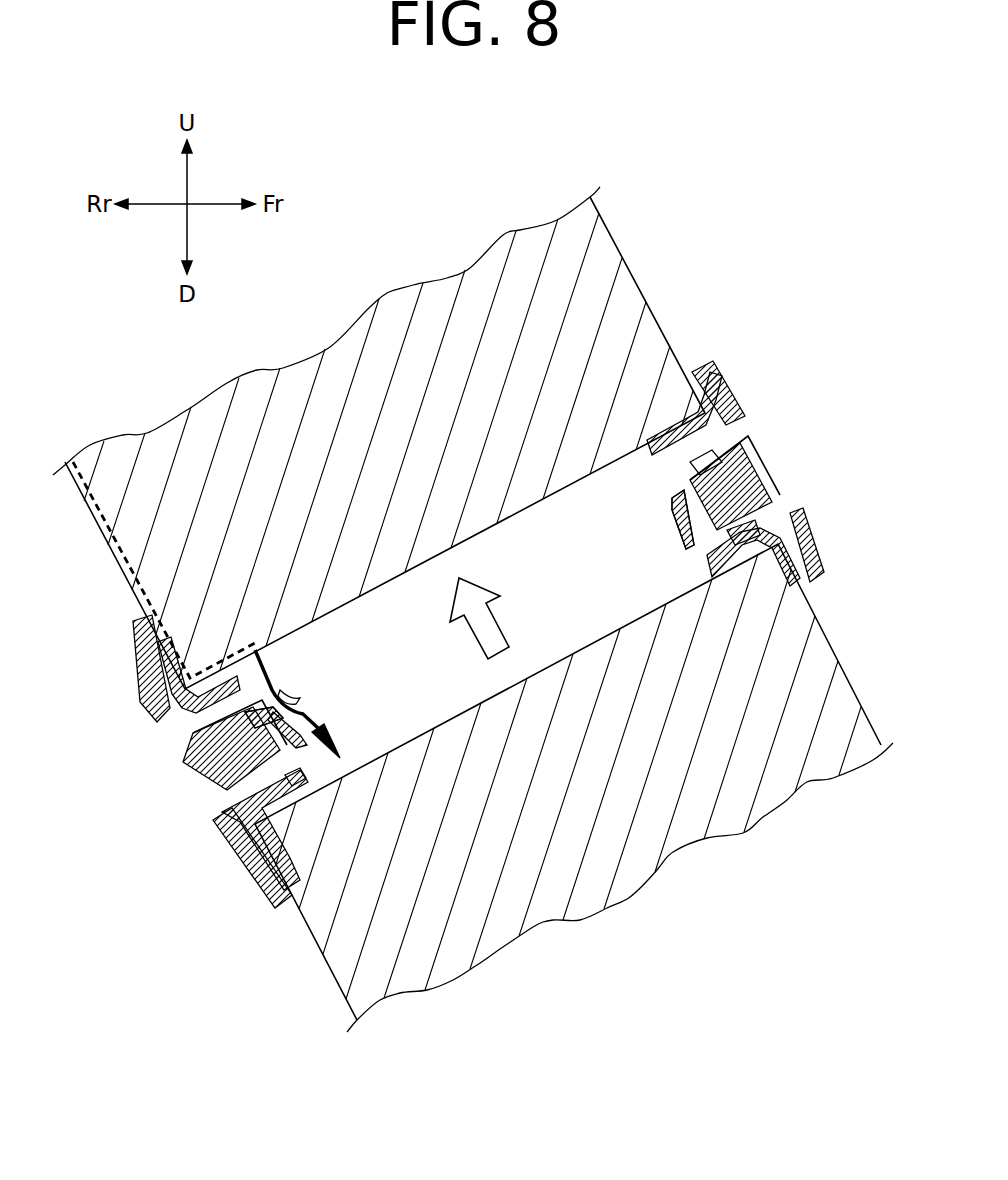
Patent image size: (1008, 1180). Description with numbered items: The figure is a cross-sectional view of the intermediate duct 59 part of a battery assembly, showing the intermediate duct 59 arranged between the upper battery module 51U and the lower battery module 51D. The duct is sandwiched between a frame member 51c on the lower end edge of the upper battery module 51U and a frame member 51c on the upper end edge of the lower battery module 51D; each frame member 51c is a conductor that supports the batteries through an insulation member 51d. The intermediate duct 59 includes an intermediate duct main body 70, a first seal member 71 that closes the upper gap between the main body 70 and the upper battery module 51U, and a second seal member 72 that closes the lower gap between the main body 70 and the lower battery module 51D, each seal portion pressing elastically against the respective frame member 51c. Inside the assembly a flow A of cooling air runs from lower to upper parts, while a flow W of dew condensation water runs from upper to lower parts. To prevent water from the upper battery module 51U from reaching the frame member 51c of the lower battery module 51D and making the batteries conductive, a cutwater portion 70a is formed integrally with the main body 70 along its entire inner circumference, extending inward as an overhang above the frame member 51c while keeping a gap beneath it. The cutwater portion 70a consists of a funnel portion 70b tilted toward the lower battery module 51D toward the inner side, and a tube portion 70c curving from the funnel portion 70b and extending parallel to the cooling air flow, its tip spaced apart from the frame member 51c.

The upper battery module 51U is at (628, 283).
The lower battery module 51D is at (827, 642).
The frame member 51c is at (185, 718).
The insulation member 51d is at (140, 637).
The intermediate duct 59 is at (188, 773).
The intermediate duct main body 70 is at (469, 609).
The cutwater portion 70a is at (670, 527).
The funnel portion 70b is at (280, 703).
The tube portion 70c is at (312, 727).
The first seal member 71 is at (288, 692).
The second seal member 72 is at (740, 538).
The flow of cooling air A is at (503, 627).
The flow of dew condensation water W is at (273, 668).